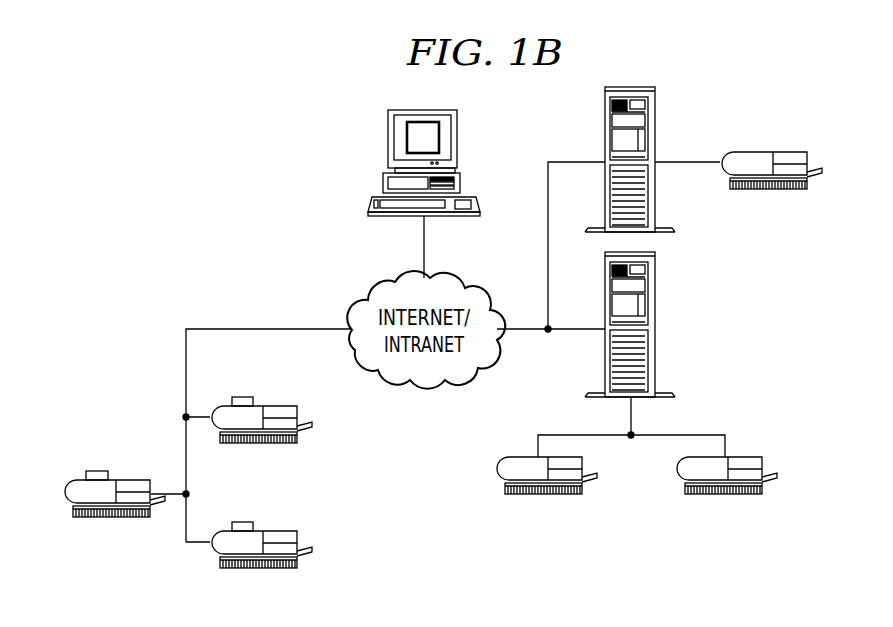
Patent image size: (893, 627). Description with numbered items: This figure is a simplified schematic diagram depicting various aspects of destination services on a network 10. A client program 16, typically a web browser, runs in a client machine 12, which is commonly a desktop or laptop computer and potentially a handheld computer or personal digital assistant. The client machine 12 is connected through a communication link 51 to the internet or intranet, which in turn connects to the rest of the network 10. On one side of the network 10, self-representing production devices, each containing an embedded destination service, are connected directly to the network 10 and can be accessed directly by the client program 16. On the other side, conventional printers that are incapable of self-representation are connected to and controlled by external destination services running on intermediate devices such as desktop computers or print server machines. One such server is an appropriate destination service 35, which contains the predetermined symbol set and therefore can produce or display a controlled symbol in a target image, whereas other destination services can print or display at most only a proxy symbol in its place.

The network 10 is at (218, 192).
The client machine 12 is at (383, 183).
The client program 16 is at (407, 136).
The communication link to internet/intranet 51 is at (424, 250).
The appropriate destination service 35 is at (655, 130).